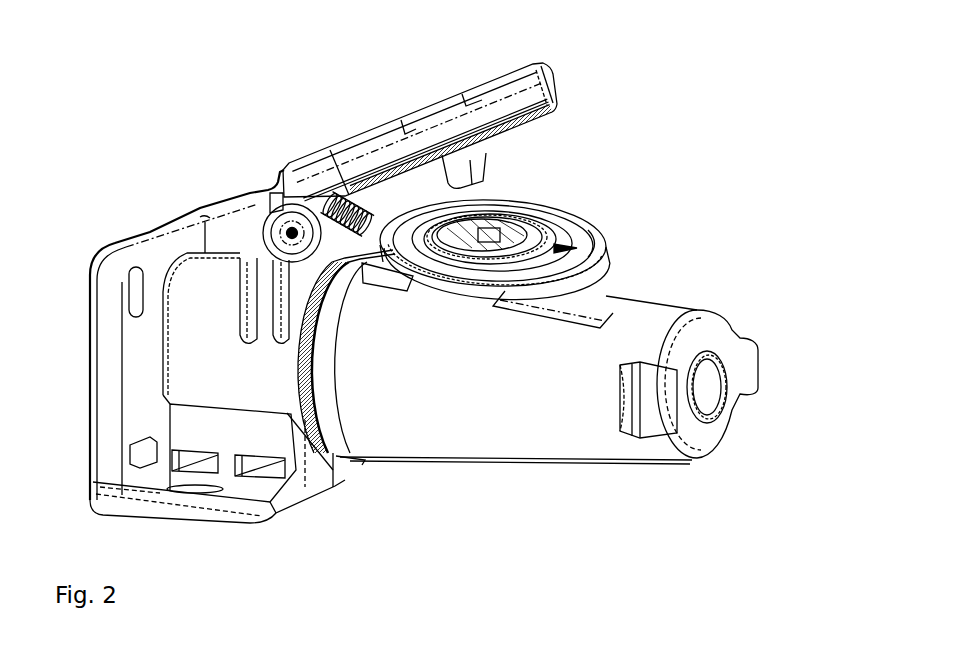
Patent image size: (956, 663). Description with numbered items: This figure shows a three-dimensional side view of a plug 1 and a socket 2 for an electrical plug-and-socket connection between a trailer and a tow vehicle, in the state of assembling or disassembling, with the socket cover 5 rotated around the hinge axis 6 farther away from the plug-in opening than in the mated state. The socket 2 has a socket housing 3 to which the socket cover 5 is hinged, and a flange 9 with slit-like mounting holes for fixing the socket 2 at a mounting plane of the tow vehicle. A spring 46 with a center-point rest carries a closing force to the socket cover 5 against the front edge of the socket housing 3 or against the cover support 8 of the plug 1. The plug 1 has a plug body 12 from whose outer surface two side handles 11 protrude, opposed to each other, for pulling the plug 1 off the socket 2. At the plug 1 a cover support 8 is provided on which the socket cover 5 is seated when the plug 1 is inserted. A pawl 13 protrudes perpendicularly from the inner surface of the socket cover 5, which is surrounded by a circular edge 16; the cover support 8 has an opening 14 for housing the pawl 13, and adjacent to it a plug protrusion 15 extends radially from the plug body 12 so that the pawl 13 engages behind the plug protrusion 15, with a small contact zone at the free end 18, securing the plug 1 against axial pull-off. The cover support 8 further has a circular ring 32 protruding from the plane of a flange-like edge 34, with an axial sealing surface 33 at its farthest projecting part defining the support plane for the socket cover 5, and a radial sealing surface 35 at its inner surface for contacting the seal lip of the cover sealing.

The plug 1 is at (515, 476).
The socket 2 is at (307, 512).
The socket housing 3 is at (200, 317).
The socket cover 5 is at (328, 127).
The hinge axis 6 is at (290, 233).
The cover support 8 is at (632, 252).
The flange 9 is at (110, 473).
The side handles 11 is at (748, 368).
The plug body 12 is at (460, 434).
The pawl 13 is at (458, 167).
The opening 14 is at (512, 243).
The plug protrusion 15 is at (468, 241).
The circular edge 16 is at (555, 88).
The free end 18 is at (478, 222).
The circular ring 32 is at (596, 244).
The axial sealing surface 33 is at (600, 255).
The flange-like edge 34 is at (602, 270).
The radial sealing surface 35 is at (596, 233).
The spring 46 is at (325, 205).